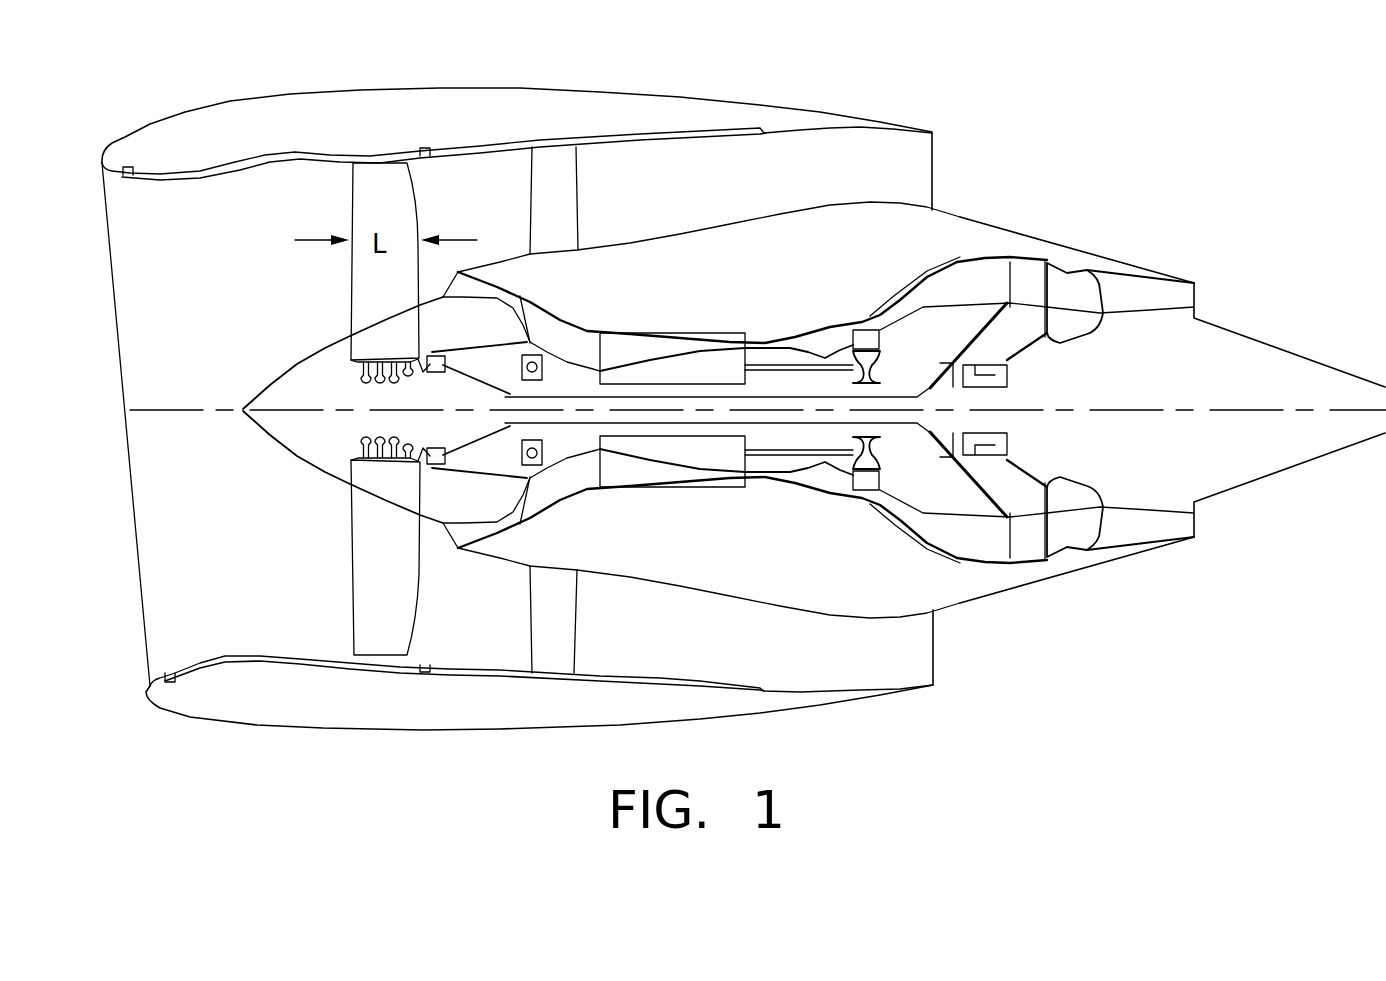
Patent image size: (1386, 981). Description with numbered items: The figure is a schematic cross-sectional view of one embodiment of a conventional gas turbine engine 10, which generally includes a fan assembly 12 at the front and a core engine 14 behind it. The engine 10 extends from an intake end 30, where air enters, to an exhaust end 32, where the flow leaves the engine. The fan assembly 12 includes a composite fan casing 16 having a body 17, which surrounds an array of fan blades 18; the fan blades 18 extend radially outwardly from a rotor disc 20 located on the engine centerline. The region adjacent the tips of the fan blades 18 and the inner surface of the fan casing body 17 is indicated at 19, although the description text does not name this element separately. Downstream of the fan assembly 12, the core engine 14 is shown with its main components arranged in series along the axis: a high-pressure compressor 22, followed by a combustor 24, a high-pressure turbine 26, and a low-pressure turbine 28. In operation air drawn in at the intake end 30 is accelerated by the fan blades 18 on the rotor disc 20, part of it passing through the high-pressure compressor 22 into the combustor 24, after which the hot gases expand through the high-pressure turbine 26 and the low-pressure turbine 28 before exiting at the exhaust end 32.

The gas turbine engine 10 is at (866, 51).
The fan assembly 12 is at (368, 585).
The core engine 14 is at (1031, 648).
The composite fan casing 16 is at (487, 670).
The body 17 is at (272, 156).
The fan blades 18 is at (372, 213).
The fan blade tip 19 is at (433, 177).
The rotor disc 20 is at (312, 443).
The high-pressure compressor 22 is at (622, 347).
The combustor 24 is at (820, 340).
The high-pressure turbine 26 is at (855, 505).
The low-pressure turbine 28 is at (968, 280).
The intake end 30 is at (95, 182).
The exhaust end 32 is at (1010, 150).